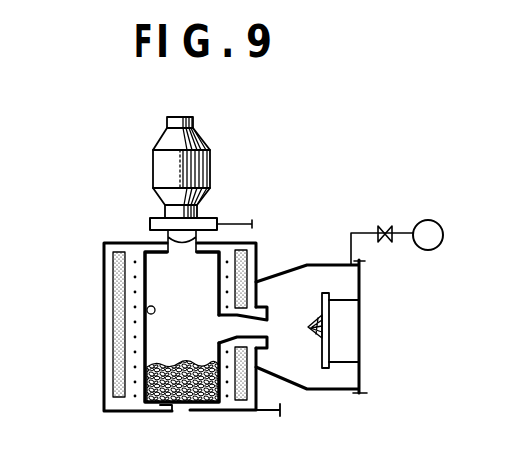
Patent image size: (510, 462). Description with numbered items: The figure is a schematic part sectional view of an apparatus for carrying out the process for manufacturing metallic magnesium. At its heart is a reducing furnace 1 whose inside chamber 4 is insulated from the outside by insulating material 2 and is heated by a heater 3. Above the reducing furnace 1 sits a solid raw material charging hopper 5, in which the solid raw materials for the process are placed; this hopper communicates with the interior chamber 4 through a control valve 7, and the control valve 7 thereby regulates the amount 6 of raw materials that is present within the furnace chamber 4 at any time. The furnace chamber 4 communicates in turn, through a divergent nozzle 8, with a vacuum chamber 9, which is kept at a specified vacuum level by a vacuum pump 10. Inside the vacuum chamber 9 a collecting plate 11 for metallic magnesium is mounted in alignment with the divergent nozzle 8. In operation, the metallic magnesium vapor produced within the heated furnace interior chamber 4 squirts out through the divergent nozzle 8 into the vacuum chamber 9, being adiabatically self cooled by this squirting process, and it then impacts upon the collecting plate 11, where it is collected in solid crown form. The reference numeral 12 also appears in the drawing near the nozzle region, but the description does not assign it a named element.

The reducing furnace 1 is at (97, 287).
The insulating material 2 is at (113, 357).
The heater 3 is at (135, 259).
The inside chamber 4 is at (147, 311).
The solid raw material charging hopper 5 is at (212, 167).
The amount of raw materials 6 is at (181, 363).
The control valve 7 is at (214, 218).
The divergent nozzle 8 is at (265, 318).
The vacuum chamber 9 is at (323, 273).
The vacuum pump 10 is at (441, 229).
The collecting plate 11 is at (330, 342).
The nozzle 12 is at (309, 328).